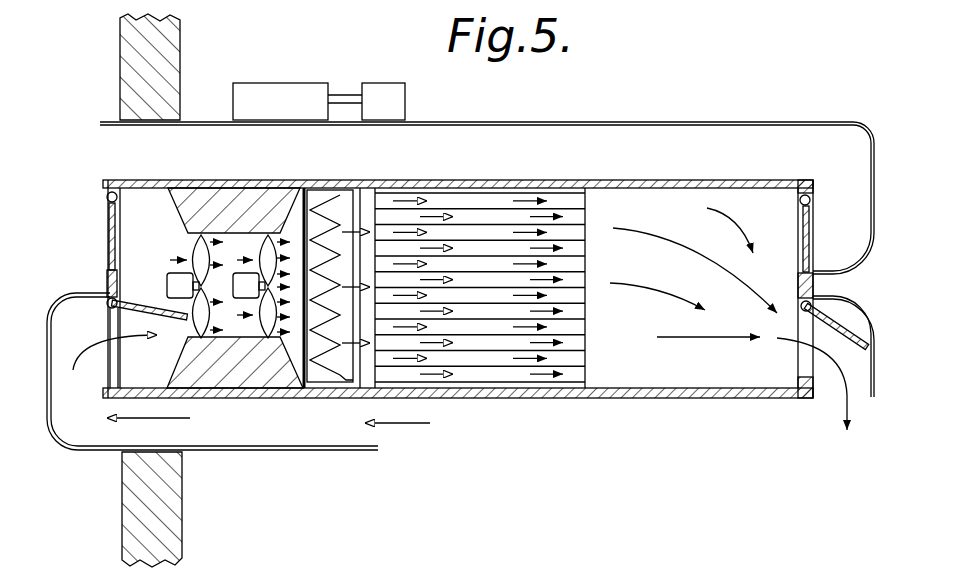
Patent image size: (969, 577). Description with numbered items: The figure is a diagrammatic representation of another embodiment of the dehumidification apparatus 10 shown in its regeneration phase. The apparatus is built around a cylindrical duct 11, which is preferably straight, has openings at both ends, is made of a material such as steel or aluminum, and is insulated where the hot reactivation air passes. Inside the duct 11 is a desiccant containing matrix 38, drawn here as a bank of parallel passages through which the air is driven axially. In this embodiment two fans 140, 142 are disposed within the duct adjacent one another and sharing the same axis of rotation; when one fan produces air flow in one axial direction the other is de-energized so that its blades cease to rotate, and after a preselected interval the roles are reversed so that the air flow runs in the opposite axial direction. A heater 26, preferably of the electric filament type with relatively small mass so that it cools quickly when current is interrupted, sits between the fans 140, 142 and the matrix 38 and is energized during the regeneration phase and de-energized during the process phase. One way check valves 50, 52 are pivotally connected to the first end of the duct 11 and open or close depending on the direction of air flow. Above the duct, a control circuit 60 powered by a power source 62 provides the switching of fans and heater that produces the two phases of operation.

The dehumidification apparatus 10 is at (658, 107).
The cylindrical duct 11 is at (660, 278).
The heater 26 is at (326, 347).
The desiccant containing matrix 38 is at (482, 213).
The one way check valve 50 is at (110, 232).
The one way check valve 52 is at (112, 283).
The control circuit 60 is at (268, 85).
The power source 62 is at (392, 87).
The first fan 140 is at (200, 253).
The second fan 142 is at (263, 247).